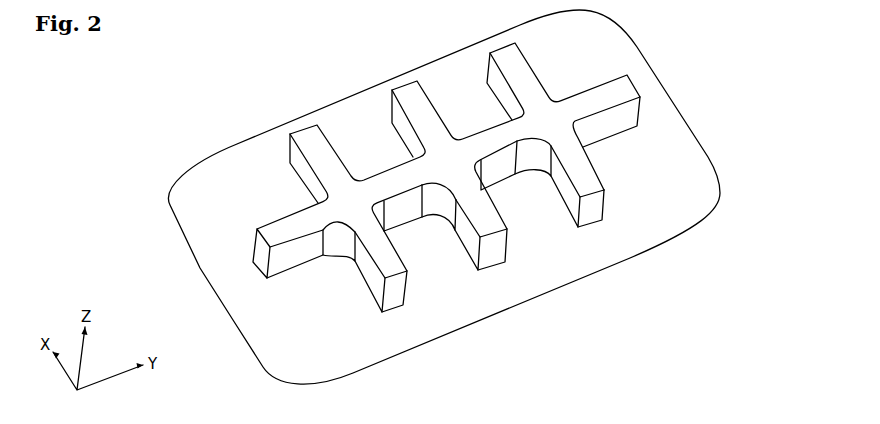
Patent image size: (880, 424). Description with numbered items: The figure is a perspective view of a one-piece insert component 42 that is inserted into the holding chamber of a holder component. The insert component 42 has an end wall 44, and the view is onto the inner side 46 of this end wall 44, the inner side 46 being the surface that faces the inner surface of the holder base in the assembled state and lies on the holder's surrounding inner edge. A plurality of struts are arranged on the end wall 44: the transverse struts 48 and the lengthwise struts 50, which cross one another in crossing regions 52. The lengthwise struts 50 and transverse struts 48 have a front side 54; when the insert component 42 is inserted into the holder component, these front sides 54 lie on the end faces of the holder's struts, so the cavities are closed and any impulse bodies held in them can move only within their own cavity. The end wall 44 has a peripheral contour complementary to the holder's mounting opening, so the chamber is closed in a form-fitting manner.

The insert component 42 is at (735, 240).
The end wall 44 is at (283, 334).
The inner side 46 is at (661, 167).
The transverse struts 48 is at (498, 85).
The lengthwise struts 50 is at (500, 161).
The crossing regions 52 is at (350, 203).
The front side 54 is at (313, 147).